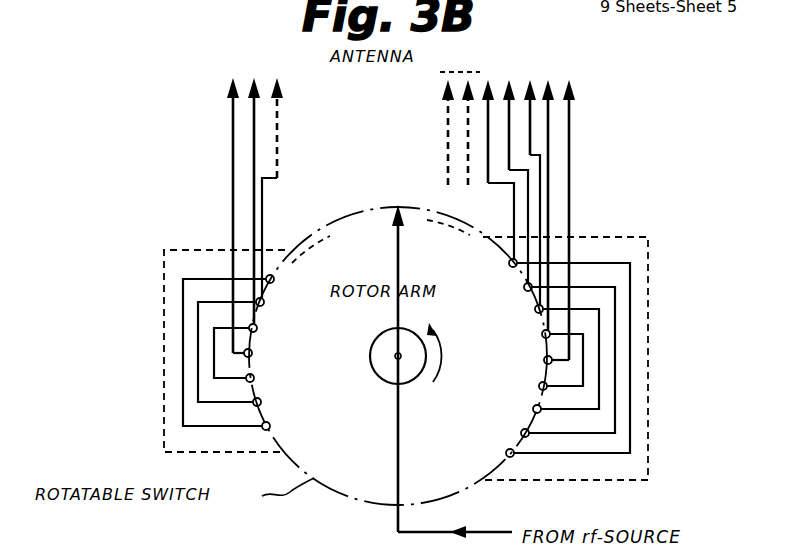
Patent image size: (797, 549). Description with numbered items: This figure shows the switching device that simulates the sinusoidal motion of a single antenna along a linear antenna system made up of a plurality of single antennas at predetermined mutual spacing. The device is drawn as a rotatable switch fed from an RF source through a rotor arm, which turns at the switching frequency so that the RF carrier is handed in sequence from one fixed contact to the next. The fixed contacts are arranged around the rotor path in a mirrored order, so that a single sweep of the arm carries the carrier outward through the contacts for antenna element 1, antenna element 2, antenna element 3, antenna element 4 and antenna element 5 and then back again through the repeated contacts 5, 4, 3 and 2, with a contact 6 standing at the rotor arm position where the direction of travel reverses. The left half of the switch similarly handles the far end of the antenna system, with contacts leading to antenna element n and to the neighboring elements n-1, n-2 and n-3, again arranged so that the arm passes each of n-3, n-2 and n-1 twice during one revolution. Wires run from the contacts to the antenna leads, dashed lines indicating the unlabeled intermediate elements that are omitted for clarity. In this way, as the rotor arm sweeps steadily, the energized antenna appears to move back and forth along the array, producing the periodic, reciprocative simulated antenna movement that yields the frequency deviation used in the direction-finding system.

The antenna element 1 / switch contact 1 is at (553, 216).
The antenna element 2 / switch contacts 2 is at (553, 229).
The antenna element 3 / switch contacts 3 is at (558, 240).
The antenna element 4 / switch contacts 4 is at (559, 252).
The antenna element 5 / switch contacts 5 is at (556, 262).
The rotor arm contact 6 is at (425, 368).
The antenna element n / switch contact n is at (245, 210).
The antenna element n-1 / switch contacts n-1 is at (248, 222).
The antenna element n-2 / switch contacts n-2 is at (244, 352).
The antenna element n-3 / switch contacts n-3 is at (242, 353).